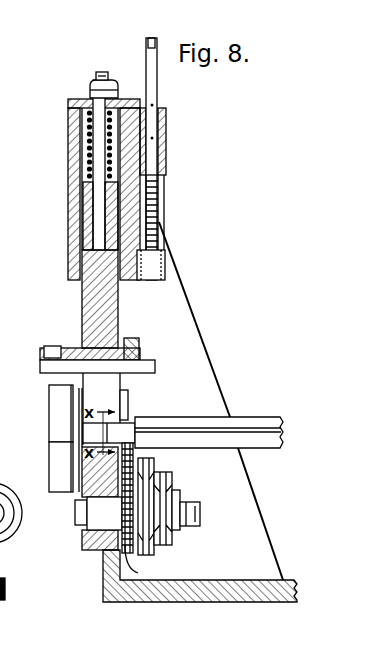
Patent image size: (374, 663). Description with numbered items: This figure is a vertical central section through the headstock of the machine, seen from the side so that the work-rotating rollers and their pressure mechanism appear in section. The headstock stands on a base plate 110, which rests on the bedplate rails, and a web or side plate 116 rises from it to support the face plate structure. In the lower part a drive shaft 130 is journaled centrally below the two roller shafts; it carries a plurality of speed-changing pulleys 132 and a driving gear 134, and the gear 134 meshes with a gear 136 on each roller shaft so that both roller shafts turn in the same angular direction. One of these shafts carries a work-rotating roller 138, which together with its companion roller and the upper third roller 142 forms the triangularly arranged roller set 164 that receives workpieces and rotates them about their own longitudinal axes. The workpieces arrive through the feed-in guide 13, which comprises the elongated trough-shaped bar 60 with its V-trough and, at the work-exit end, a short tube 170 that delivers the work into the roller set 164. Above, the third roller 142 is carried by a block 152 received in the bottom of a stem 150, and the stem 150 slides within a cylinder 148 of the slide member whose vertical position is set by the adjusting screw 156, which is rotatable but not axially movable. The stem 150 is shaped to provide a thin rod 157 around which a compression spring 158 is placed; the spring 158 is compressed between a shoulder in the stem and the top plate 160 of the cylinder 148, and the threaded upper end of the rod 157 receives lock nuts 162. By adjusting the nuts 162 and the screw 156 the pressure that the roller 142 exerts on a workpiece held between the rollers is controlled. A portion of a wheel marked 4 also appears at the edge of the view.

The wheel 4 is at (11, 541).
The feed-in guide 13 is at (278, 406).
The elongated bar 60 is at (233, 448).
The base plate 110 is at (200, 602).
The web plate 116 is at (210, 386).
The drive shaft 130 is at (92, 514).
The speed-changing pulleys 132 is at (170, 548).
The driving gear 134 is at (140, 566).
The gear 136 is at (138, 452).
The work-rotating roller 138 is at (54, 473).
The third roller 142 is at (50, 410).
The cylinder 148 is at (68, 209).
The stem 150 is at (88, 316).
The block 152 is at (105, 384).
The adjusting screw 156 is at (157, 90).
The thin rod 157 is at (96, 175).
The compression spring 158 is at (88, 137).
The top plate 160 is at (90, 93).
The lock nuts 162 is at (96, 76).
The roller set 164 is at (40, 445).
The short tube 170 is at (123, 430).